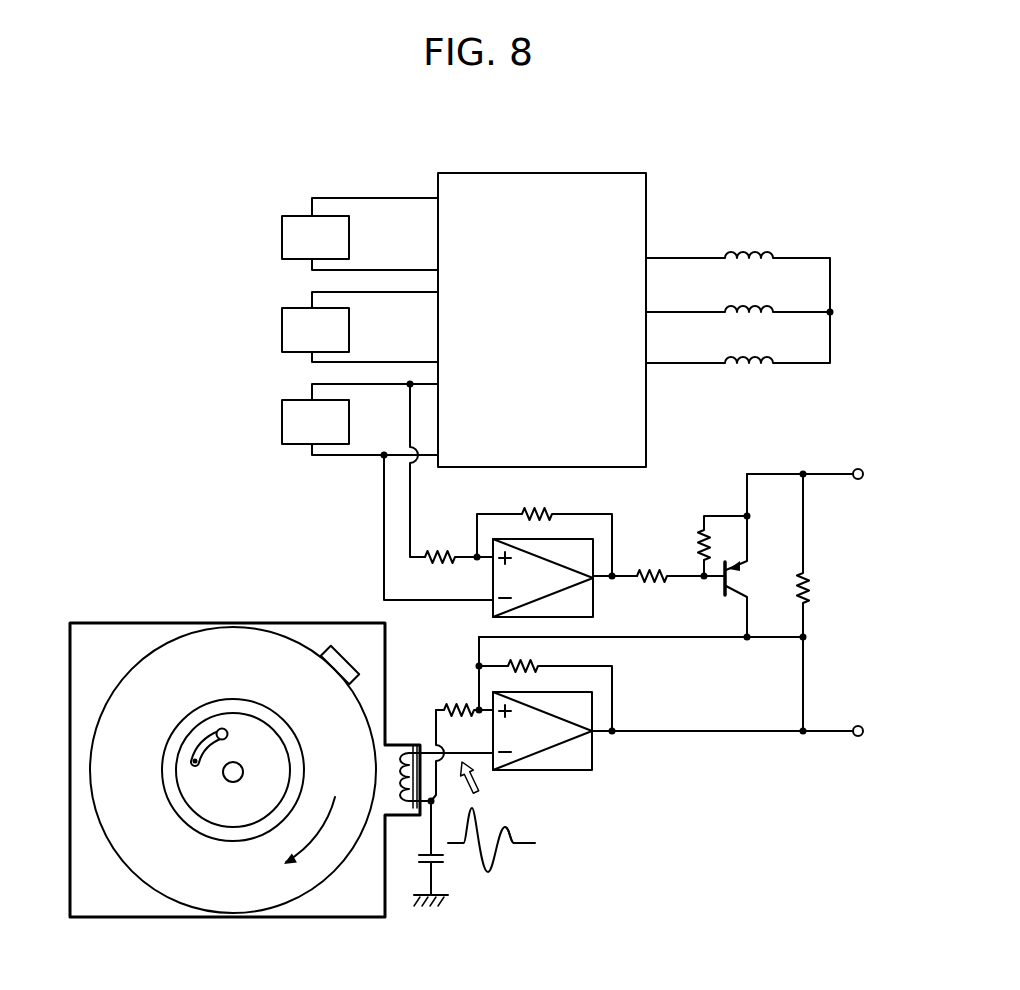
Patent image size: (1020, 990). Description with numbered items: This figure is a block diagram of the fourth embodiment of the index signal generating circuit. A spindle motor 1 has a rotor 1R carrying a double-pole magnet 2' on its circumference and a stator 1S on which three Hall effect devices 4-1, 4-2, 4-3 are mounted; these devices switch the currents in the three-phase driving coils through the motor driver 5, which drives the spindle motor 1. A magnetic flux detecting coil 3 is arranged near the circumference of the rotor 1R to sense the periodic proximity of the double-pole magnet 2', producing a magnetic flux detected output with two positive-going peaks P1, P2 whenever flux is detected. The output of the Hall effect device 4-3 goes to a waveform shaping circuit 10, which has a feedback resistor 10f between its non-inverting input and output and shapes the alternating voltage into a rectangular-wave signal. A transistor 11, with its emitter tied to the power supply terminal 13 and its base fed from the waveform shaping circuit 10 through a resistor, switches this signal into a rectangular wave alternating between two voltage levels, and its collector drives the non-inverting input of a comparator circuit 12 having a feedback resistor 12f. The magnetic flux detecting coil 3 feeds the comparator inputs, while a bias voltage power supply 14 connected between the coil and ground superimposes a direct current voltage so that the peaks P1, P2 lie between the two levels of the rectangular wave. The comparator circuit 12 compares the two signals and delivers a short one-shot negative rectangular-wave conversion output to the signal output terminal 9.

The spindle motor 1 is at (245, 766).
The rotor 1R is at (285, 655).
The stator 1S is at (352, 893).
The double-pole magnet 2' is at (372, 657).
The magnetic flux detecting coil 3 is at (396, 762).
The Hall effect device 4-1 is at (282, 237).
The Hall effect device 4-2 is at (282, 330).
The Hall effect device 4-3 is at (282, 429).
The motor driver 5 is at (646, 198).
The signal output terminal 9 is at (864, 731).
The waveform shaping circuit 10 is at (593, 601).
The feedback resistor 10f is at (545, 510).
The transistor 11 is at (740, 578).
The comparator circuit 12 is at (592, 757).
The feedback resistor 12f is at (545, 658).
The power supply terminal 13 is at (862, 478).
The bias voltage power supply 14 is at (445, 857).
The positive-going peak P1 is at (478, 818).
The positive-going peak P2 is at (508, 827).